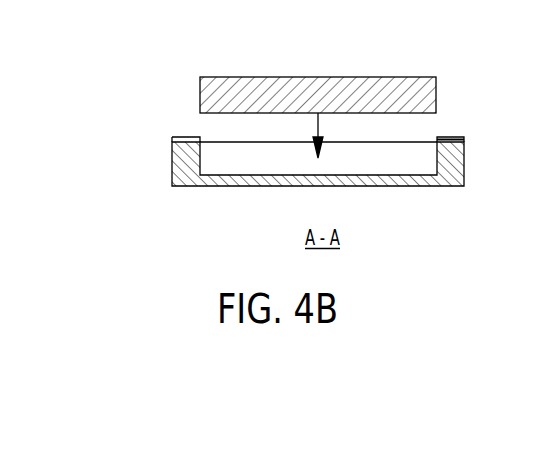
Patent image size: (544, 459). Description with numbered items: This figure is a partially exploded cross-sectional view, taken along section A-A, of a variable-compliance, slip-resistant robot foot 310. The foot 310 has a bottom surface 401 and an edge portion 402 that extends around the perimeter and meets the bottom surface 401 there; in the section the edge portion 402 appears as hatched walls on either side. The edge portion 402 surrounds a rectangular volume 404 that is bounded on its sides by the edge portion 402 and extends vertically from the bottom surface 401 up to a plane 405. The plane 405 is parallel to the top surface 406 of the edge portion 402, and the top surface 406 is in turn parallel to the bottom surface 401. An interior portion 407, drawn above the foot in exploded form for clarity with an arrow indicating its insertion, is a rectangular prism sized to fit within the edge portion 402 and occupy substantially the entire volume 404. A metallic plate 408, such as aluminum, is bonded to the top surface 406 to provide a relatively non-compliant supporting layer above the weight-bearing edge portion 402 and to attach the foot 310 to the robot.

The foot 310 is at (95, 135).
The bottom surface 401 is at (397, 187).
The edge portion 402 is at (170, 180).
The volume 404 is at (220, 150).
The plane 405 is at (420, 142).
The top surface 406 is at (462, 143).
The interior portion 407 is at (330, 77).
The metallic plate 408 is at (458, 138).